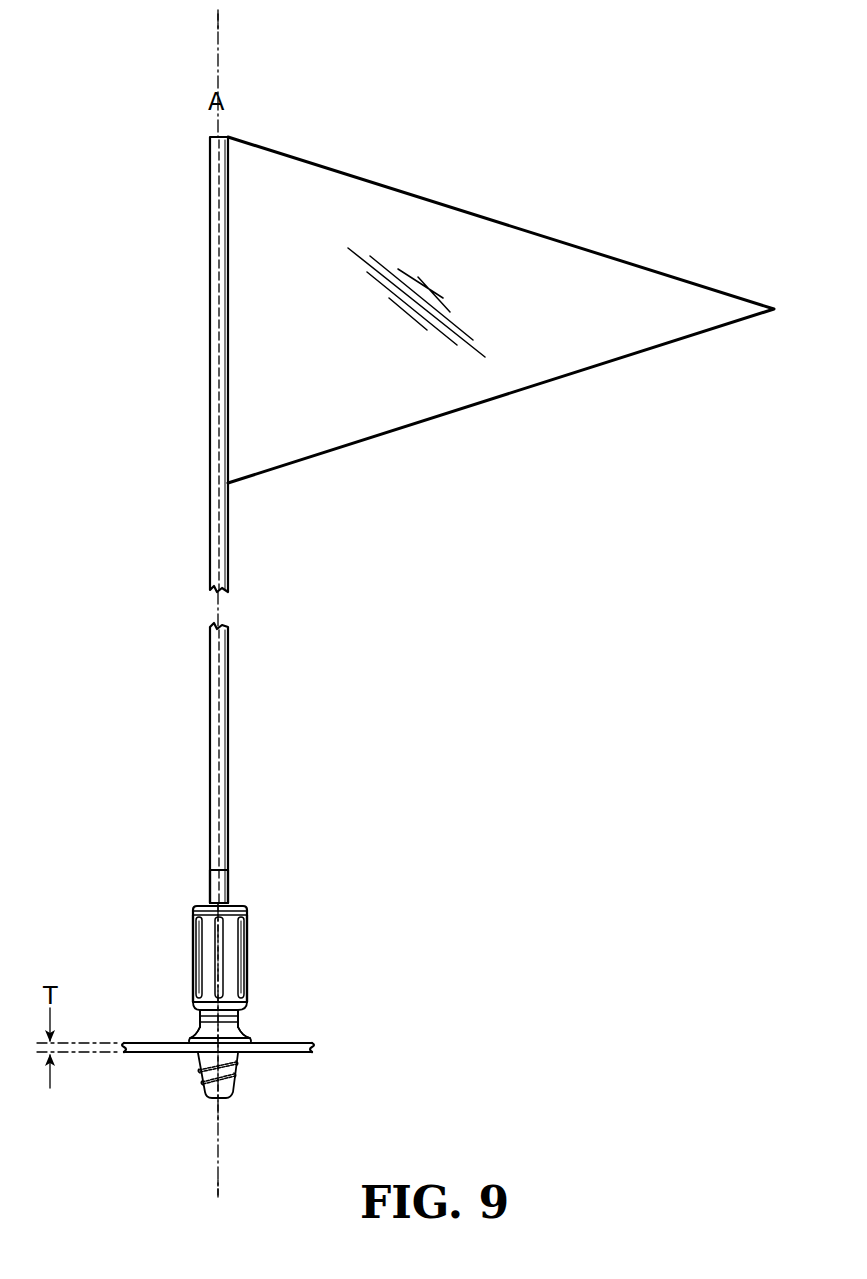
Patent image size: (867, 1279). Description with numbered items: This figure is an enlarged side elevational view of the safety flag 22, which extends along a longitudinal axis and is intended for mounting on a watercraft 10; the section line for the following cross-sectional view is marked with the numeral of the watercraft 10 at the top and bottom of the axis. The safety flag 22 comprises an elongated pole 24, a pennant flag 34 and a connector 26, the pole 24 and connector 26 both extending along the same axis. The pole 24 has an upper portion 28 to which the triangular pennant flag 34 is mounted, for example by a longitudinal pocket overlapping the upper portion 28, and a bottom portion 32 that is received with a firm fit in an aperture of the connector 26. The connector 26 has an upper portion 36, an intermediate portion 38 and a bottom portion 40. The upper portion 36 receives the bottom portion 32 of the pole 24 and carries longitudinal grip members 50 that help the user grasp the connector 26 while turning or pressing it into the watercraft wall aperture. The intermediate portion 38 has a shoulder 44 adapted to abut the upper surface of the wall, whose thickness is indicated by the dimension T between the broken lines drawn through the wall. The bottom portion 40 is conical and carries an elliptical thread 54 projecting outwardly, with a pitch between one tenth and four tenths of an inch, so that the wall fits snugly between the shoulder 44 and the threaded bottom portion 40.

The watercraft 10 is at (228, 22).
The safety flag 22 is at (476, 179).
The elongated pole 24 is at (238, 559).
The connector 26 is at (187, 936).
The upper portion of the elongated pole 28 is at (209, 304).
The bottom portion of the elongated pole 32 is at (217, 883).
The pennant flag 34 is at (322, 323).
The upper portion of the connector 36 is at (259, 908).
The intermediate portion of the connector 38 is at (259, 1006).
The bottom portion of the connector 40 is at (259, 1056).
The shoulder 44 is at (197, 1038).
The longitudinal grip member 50 is at (225, 922).
The elliptical thread 54 is at (200, 1084).